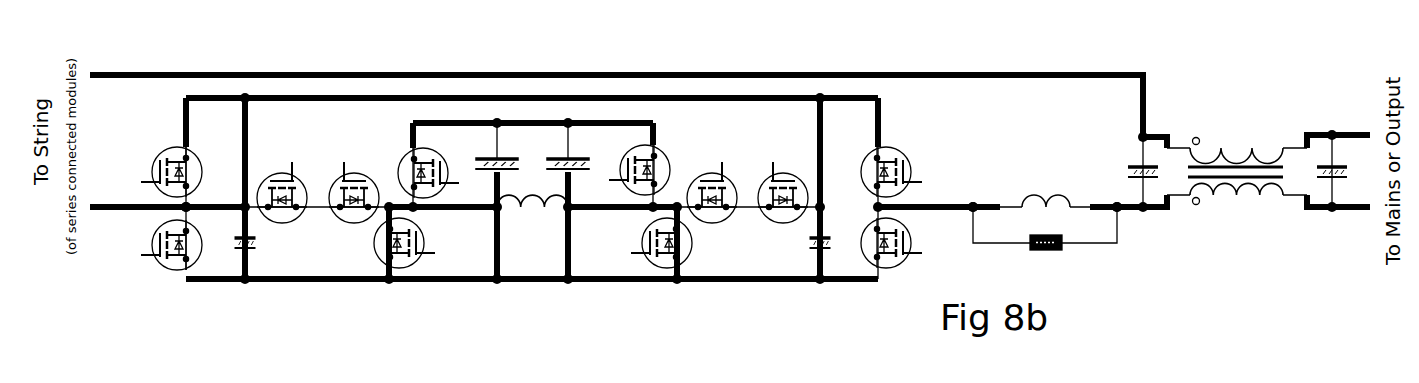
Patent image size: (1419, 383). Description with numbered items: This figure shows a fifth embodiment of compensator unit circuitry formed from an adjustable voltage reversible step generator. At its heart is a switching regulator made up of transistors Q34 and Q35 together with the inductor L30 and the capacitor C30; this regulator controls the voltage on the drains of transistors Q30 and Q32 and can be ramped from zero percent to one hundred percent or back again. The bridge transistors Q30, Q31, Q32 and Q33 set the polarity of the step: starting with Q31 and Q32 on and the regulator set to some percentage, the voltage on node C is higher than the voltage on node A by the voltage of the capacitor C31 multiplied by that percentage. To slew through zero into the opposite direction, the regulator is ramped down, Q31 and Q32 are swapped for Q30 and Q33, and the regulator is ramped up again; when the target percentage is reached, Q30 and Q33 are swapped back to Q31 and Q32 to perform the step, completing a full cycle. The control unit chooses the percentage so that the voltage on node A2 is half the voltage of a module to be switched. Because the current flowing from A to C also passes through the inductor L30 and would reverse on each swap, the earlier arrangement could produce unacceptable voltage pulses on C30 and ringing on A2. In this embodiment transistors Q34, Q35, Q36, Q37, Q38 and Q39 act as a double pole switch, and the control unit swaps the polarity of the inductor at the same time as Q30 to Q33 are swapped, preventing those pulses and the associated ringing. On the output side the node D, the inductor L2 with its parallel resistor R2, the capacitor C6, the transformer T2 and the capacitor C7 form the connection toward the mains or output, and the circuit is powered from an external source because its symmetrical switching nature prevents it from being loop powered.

The transistor Q30 is at (158, 161).
The transistor Q31 is at (158, 256).
The transistor Q32 is at (909, 166).
The transistor Q33 is at (909, 243).
The switching regulator transistor Q34 is at (408, 164).
The switching regulator transistor Q35 is at (422, 243).
The double pole switch transistor Q36 is at (656, 163).
The double pole switch transistor Q37 is at (684, 245).
The double pole switch transistor Q38 is at (318, 205).
The double pole switch transistor Q39 is at (747, 203).
The capacitor C30 is at (533, 259).
The capacitor C31 is at (532, 167).
The inductor L30 is at (532, 217).
The inductor L2 is at (1035, 190).
The resistor R2 is at (1046, 257).
The capacitor C6 is at (1126, 156).
The transformer T2 is at (1235, 157).
The capacitor C7 is at (1332, 139).
The node A is at (152, 198).
The node A2 is at (898, 122).
The node C is at (965, 199).
The node D is at (1128, 222).